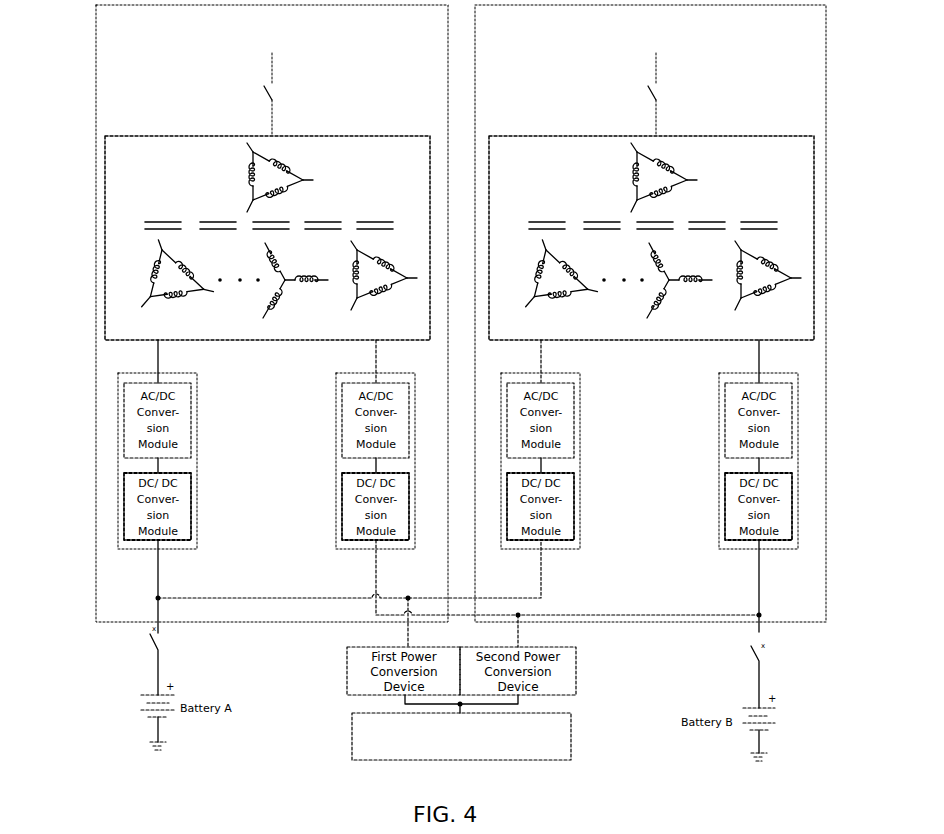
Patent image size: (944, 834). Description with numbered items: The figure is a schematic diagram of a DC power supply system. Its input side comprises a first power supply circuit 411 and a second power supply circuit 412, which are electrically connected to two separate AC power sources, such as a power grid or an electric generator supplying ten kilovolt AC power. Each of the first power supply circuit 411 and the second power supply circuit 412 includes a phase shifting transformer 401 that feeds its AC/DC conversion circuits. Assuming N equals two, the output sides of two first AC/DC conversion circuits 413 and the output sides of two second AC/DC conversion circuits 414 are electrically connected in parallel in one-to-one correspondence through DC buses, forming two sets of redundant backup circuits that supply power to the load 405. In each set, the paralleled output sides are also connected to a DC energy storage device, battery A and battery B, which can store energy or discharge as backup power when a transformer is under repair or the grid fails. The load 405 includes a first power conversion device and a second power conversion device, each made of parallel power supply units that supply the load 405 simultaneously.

The first power supply circuit 411 is at (96, 185).
The second power supply circuit 412 is at (826, 122).
The phase shifting transformer 401 is at (814, 232).
The first AC/DC conversion circuit 413 is at (118, 462).
The second AC/DC conversion circuit 414 is at (800, 460).
The load 405 is at (571, 737).